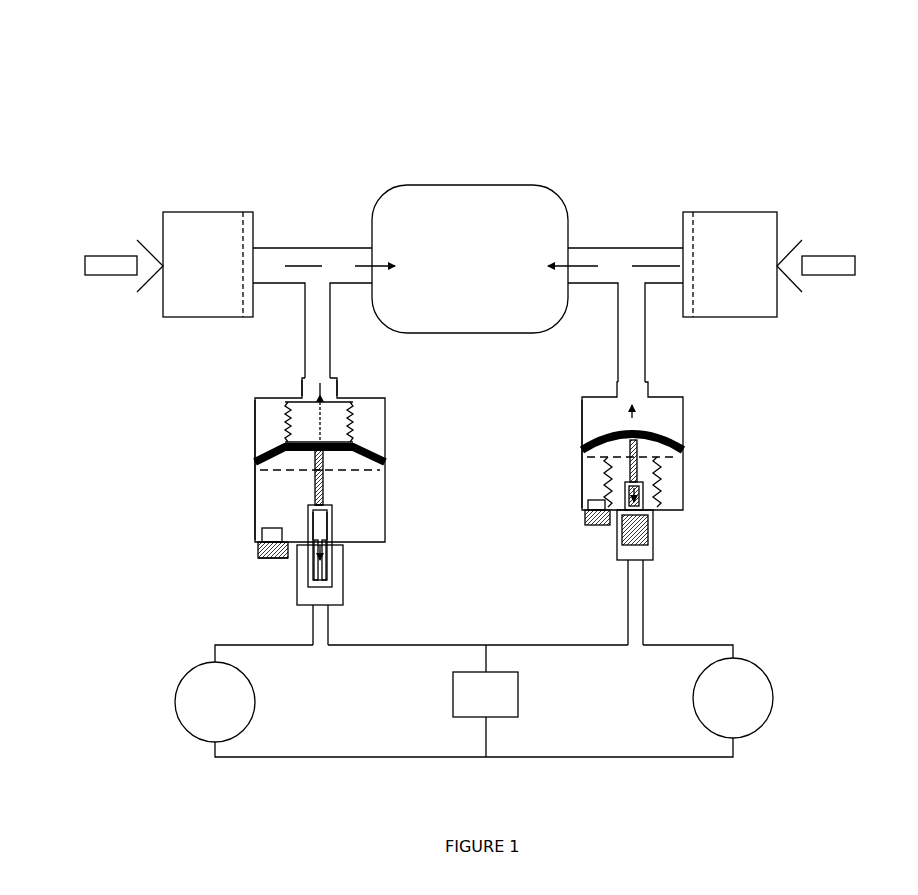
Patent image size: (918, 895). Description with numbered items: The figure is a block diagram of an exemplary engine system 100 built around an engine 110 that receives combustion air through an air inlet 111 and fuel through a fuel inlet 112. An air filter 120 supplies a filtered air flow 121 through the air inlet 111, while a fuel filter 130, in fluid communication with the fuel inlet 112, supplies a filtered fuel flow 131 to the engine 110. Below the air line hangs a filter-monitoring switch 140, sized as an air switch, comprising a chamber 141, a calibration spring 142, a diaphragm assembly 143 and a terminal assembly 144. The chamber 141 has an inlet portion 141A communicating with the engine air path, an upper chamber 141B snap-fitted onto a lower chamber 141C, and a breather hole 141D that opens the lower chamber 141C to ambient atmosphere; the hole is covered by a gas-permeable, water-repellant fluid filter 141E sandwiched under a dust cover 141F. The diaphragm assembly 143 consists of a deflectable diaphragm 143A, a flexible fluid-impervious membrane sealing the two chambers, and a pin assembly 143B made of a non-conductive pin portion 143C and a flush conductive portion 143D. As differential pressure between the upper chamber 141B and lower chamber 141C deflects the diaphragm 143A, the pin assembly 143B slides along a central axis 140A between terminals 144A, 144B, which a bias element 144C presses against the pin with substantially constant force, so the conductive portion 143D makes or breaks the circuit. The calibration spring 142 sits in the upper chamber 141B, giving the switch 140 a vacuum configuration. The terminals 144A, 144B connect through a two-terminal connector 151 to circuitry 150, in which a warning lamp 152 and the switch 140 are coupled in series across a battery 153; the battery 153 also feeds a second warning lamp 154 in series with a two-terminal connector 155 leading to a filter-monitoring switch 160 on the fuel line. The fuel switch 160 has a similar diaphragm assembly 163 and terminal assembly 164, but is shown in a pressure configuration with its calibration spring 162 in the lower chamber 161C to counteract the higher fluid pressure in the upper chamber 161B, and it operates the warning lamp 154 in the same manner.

The engine system 100 is at (750, 28).
The engine 110 is at (460, 185).
The air inlet 111 is at (342, 248).
The fuel inlet 112 is at (596, 248).
The air filter 120 is at (712, 212).
The filtered air flow 121 is at (614, 267).
The fuel filter 130 is at (205, 212).
The filtered fuel flow 131 is at (340, 267).
The filter-monitoring switch 140 is at (185, 383).
The central axis 140A is at (323, 415).
The chamber 141 is at (255, 398).
The inlet portion 141A is at (302, 378).
The upper chamber 141B is at (255, 432).
The lower chamber 141C is at (255, 500).
The breather hole 141D is at (262, 535).
The fluid filter 141E is at (258, 547).
The dust cover 141F is at (258, 560).
The calibration spring 142 is at (350, 425).
The diaphragm assembly 143 is at (366, 450).
The deflectable diaphragm 143A is at (385, 462).
The pin assembly 143B is at (336, 478).
The non-conductive pin portion 143C is at (328, 488).
The conductive portion 143D is at (330, 500).
The terminal assembly 144 is at (336, 530).
The terminal 144A is at (331, 553).
The terminal 144B is at (332, 578).
The bias element 144C is at (310, 550).
The circuitry 150 is at (447, 643).
The two-terminal connector 151 is at (297, 598).
The warning lamp 152 is at (185, 680).
The battery 153 is at (518, 710).
The warning lamp 154 is at (765, 685).
The two-terminal connector 155 is at (617, 560).
The filter-monitoring switch 160 is at (716, 392).
The upper chamber 161B is at (582, 432).
The lower chamber 161C is at (582, 485).
The calibration spring 162 is at (645, 488).
The diaphragm assembly 163 is at (676, 432).
The terminal assembly 164 is at (650, 496).